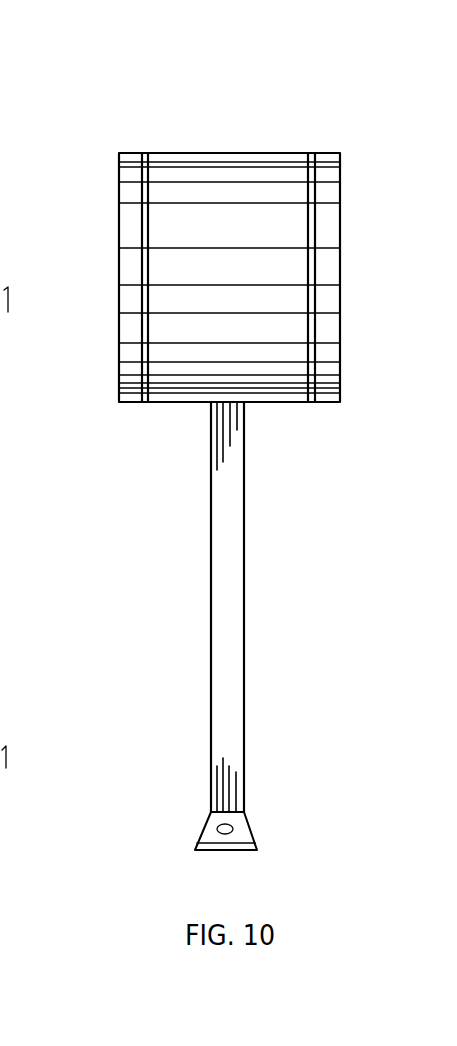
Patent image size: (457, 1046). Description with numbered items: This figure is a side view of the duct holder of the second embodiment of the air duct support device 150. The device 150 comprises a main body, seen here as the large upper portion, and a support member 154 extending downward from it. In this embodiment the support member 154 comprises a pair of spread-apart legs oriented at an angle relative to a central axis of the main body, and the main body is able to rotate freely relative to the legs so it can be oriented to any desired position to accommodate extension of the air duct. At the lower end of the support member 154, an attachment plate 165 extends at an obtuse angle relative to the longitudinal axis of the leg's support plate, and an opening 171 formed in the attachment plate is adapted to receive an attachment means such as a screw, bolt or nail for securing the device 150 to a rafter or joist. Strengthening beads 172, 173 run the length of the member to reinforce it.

The air duct support device 150 is at (232, 151).
The strengthening bead 172 is at (143, 151).
The strengthening bead 173 is at (309, 152).
The support member 154 is at (245, 540).
The attachment plate 165 is at (250, 835).
The opening 171 is at (203, 836).